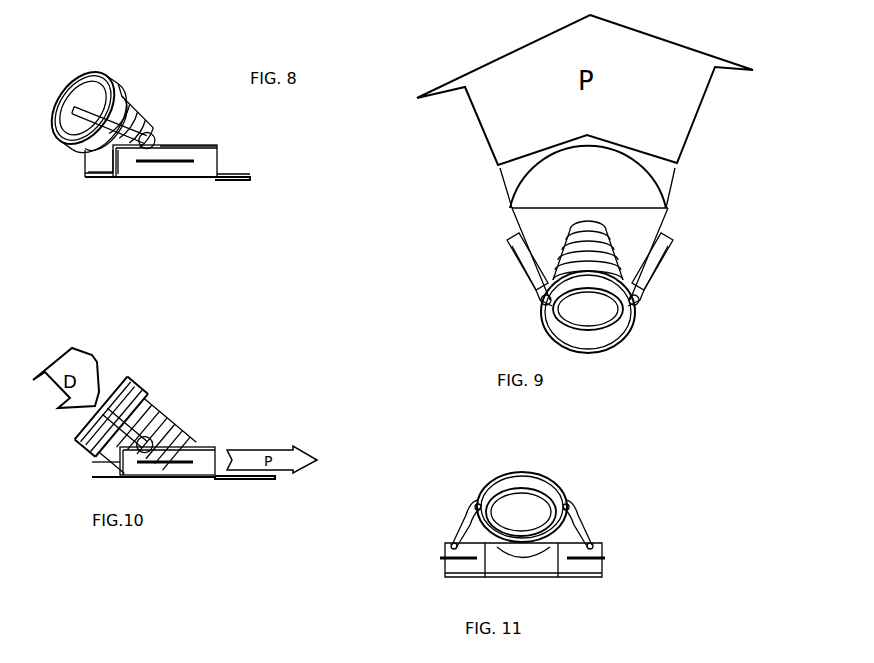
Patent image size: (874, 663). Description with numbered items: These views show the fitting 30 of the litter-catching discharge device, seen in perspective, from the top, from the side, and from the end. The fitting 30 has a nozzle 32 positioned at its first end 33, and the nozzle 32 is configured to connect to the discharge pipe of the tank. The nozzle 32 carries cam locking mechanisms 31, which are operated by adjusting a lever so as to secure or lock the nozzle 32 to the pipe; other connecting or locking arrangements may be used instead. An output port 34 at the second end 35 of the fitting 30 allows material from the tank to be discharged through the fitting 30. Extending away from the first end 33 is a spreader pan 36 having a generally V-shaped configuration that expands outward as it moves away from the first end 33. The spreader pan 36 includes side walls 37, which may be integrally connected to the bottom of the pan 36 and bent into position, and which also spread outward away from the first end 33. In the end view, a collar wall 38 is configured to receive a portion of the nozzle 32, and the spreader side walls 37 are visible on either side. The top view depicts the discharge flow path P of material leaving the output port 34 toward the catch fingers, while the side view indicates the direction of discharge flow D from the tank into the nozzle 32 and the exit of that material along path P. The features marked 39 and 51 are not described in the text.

In FIG. 8, the fitting 30 is at (189, 44).
In FIG. 11, the cam locking mechanisms 31 is at (469, 501).
In FIG. 8, the nozzle 32 is at (124, 58).
In FIG. 9, the nozzle 32 is at (634, 349).
In FIG. 11, the nozzle 32 is at (566, 472).
In FIG. 8, the first end 33 is at (61, 199).
In FIG. 8, the output port 34 is at (246, 158).
In FIG. 8, the second end 35 is at (226, 203).
In FIG. 8, the spreader pan 36 is at (244, 178).
In FIG. 9, the spreader pan 36 is at (598, 178).
In FIG. 10, the spreader pan 36 is at (247, 480).
In FIG. 8, the side walls 37 is at (133, 178).
In FIG. 9, the side walls 37 is at (508, 222).
In FIG. 11, the side walls 37 is at (455, 568).
In FIG. 8, the collar wall 38 is at (102, 175).
In FIG. 11, the collar wall 38 is at (547, 565).
In FIG. 8, the top edge 39 is at (198, 145).
In FIG. 9, the top edge 39 is at (553, 227).
In FIG. 8, the slot 51 is at (172, 181).
In FIG. 9, the slot 51 is at (516, 260).